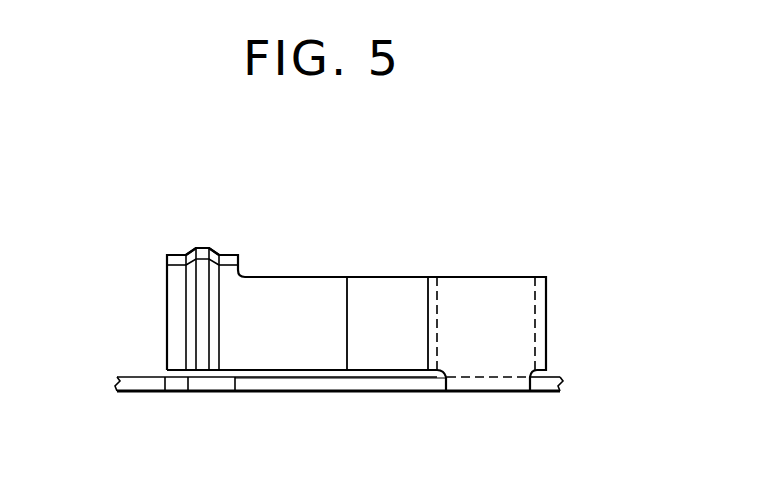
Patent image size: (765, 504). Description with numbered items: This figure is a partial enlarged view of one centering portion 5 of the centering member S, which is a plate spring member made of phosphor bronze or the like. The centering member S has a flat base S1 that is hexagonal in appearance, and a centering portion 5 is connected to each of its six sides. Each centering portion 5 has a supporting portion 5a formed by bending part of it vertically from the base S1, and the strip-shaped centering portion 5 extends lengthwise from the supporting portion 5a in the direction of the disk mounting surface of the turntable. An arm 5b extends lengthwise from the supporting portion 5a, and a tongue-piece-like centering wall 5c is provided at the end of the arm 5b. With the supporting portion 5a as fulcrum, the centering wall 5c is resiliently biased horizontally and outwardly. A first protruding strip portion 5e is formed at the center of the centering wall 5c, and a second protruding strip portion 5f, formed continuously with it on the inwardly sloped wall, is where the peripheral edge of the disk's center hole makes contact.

The centering portion 5 is at (388, 278).
The supporting portion 5a is at (504, 290).
The arm 5b is at (310, 308).
The centering wall 5c is at (228, 283).
The first protruding strip portion 5e is at (202, 297).
The second protruding strip portion 5f is at (203, 250).
The centering member S is at (272, 392).
The base S1 is at (366, 385).